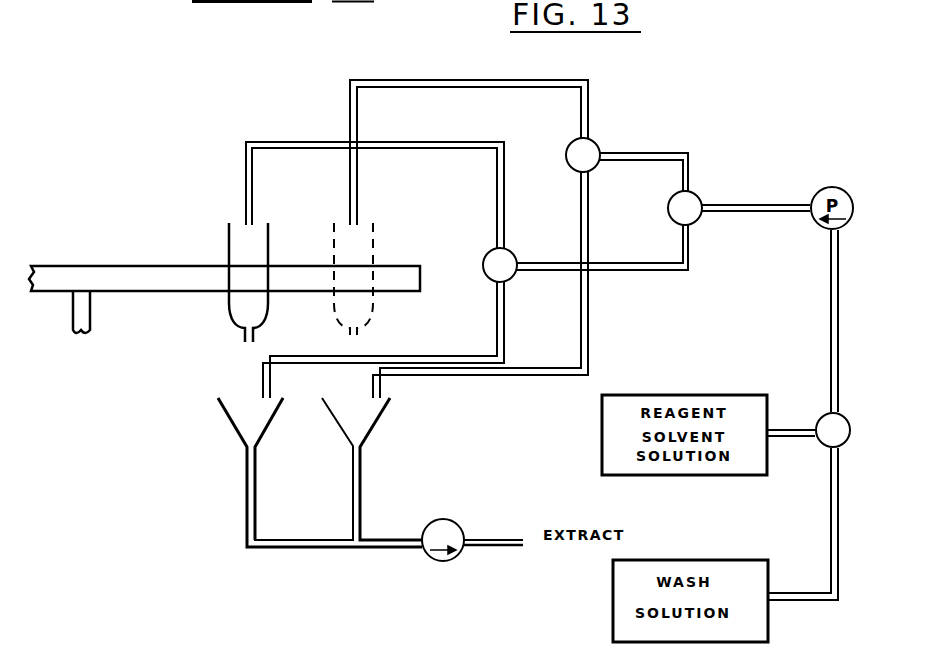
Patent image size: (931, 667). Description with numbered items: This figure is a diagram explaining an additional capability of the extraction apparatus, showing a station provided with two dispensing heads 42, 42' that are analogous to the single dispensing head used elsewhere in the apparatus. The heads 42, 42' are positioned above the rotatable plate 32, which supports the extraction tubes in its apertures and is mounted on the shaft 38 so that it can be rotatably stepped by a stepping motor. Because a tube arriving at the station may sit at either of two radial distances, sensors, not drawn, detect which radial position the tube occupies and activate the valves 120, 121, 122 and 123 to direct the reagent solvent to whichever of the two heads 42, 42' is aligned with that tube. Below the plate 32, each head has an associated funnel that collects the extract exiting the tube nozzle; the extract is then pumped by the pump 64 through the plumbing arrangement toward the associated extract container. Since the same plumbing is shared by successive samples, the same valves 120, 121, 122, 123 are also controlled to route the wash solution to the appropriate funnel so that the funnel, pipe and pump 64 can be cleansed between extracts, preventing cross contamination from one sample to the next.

The rotatable plate 32 is at (422, 275).
The shaft 38 is at (83, 317).
The dispensing head 42 is at (365, 258).
The dispensing head 42' is at (266, 262).
The pump 64 is at (447, 558).
The valve 120 is at (863, 413).
The valve 121 is at (700, 200).
The valve 122 is at (599, 145).
The valve 123 is at (513, 278).